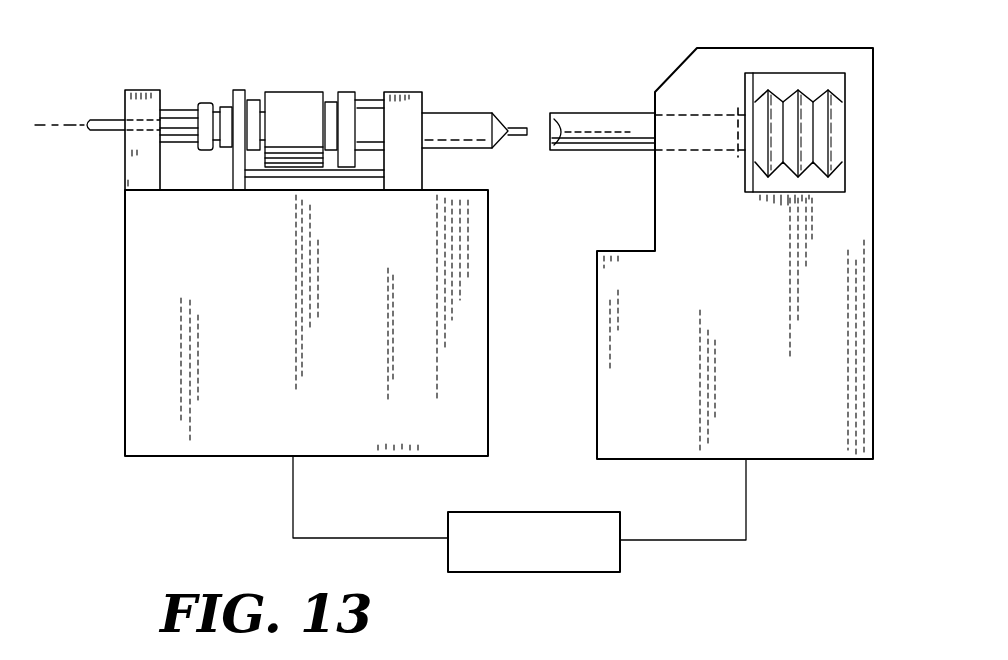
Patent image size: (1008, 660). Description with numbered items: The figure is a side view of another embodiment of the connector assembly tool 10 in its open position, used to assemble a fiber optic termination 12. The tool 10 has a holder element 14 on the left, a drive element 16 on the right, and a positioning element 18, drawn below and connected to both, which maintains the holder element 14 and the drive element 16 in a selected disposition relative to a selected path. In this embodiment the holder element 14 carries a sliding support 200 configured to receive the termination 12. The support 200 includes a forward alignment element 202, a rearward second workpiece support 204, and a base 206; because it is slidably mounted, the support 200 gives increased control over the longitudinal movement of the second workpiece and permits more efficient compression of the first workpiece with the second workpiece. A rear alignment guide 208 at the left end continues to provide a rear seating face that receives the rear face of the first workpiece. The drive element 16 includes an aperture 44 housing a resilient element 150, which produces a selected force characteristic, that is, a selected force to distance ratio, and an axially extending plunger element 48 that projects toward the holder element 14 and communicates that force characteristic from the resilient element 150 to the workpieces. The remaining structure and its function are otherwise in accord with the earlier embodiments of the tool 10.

The tool 10 is at (592, 30).
The fiber optic termination 12 is at (288, 93).
The holder element 14 is at (257, 311).
The drive element 16 is at (750, 325).
The positioning element 18 is at (544, 548).
The aperture 44 is at (834, 183).
The plunger element 48 is at (603, 122).
The resilient element 150 is at (837, 105).
The sliding support 200 is at (378, 78).
The forward alignment element 202 is at (417, 92).
The rearward second workpiece support 204 is at (240, 90).
The base 206 is at (247, 190).
The rear alignment guide 208 is at (145, 90).